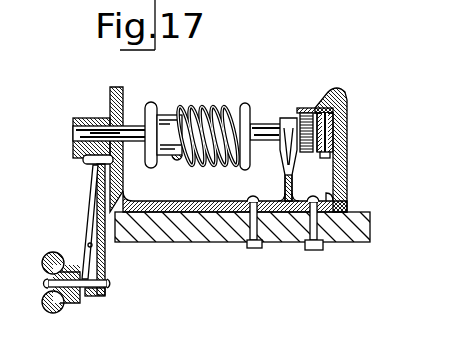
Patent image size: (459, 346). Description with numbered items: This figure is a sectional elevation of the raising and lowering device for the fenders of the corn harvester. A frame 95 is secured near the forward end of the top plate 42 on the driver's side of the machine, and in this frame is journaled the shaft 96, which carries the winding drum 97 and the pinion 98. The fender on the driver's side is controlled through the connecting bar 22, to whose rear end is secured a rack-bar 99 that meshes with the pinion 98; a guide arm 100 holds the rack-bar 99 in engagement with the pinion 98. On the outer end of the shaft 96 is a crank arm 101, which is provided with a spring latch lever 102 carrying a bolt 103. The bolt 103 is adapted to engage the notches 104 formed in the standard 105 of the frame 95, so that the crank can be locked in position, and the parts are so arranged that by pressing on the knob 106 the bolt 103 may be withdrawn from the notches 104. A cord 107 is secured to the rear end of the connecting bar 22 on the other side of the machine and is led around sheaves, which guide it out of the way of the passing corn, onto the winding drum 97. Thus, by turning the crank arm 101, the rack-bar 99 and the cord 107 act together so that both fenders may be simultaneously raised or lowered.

The connecting bar 22 is at (333, 148).
The top plate 42 is at (240, 239).
The frame 95 is at (198, 202).
The shaft 96 is at (268, 124).
The winding drum 97 is at (167, 110).
The pinion 98 is at (307, 155).
The rack-bar 99 is at (303, 108).
The guide arm 100 is at (348, 120).
The crank arm 101 is at (85, 156).
The spring latch lever 102 is at (93, 207).
The bolt 103 is at (87, 166).
The notches 104 is at (110, 107).
The standard 105 is at (125, 95).
The knob 106 is at (43, 257).
The cord 107 is at (218, 105).